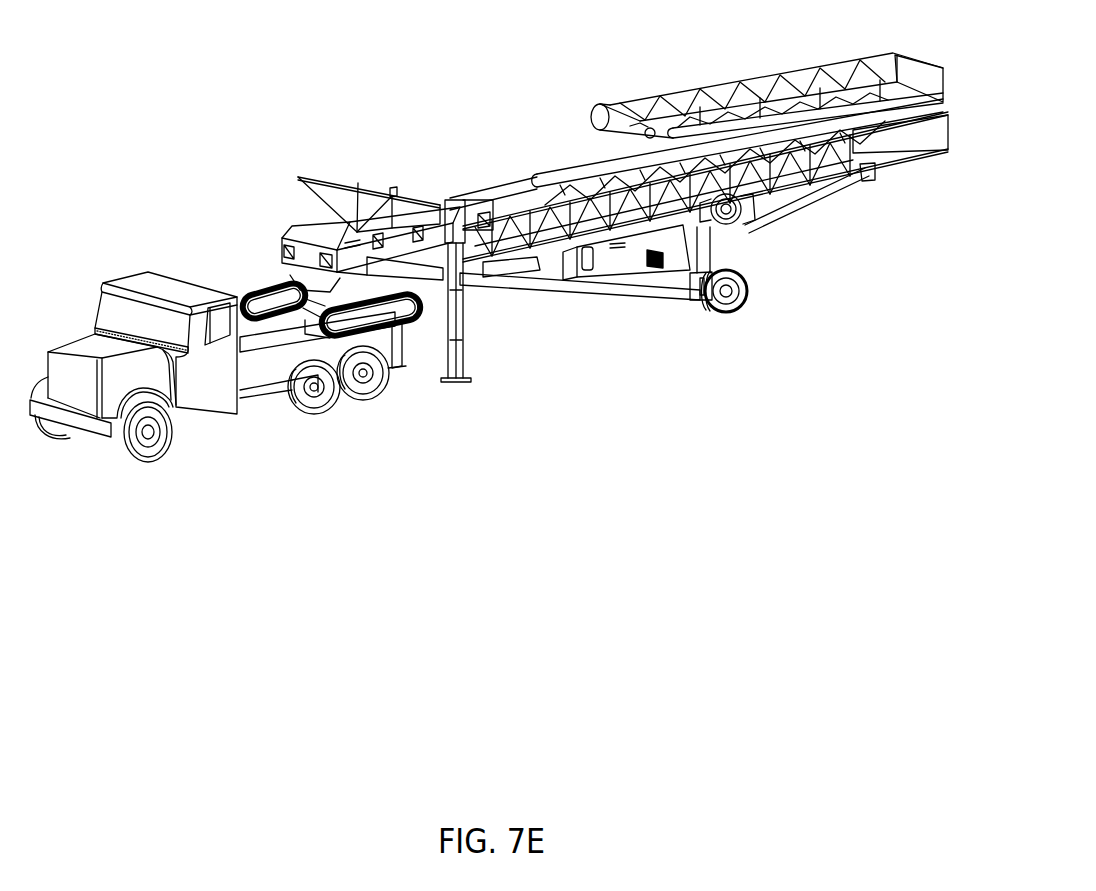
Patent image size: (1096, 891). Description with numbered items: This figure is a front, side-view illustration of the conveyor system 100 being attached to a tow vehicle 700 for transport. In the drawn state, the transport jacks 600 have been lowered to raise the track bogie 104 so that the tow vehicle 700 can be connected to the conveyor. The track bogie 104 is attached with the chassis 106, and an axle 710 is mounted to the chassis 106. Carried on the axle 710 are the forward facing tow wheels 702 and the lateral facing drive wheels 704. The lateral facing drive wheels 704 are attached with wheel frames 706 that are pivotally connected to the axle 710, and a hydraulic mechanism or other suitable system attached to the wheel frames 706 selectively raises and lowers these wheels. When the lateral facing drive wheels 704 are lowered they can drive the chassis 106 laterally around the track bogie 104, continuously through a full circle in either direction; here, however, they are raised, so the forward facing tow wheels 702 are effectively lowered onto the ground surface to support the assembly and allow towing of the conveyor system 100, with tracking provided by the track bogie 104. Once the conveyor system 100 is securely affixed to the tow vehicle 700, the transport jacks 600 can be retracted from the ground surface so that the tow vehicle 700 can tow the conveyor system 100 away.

The conveyor system 100 is at (512, 183).
The track bogie 104 is at (277, 282).
The chassis 106 is at (620, 287).
The transport jacks 600 is at (452, 338).
The tow vehicle 700 is at (137, 278).
The forward facing tow wheels 702 is at (730, 308).
The lateral facing drive wheels 704 is at (743, 220).
The wheel frames 706 is at (700, 217).
The axle 710 is at (697, 290).